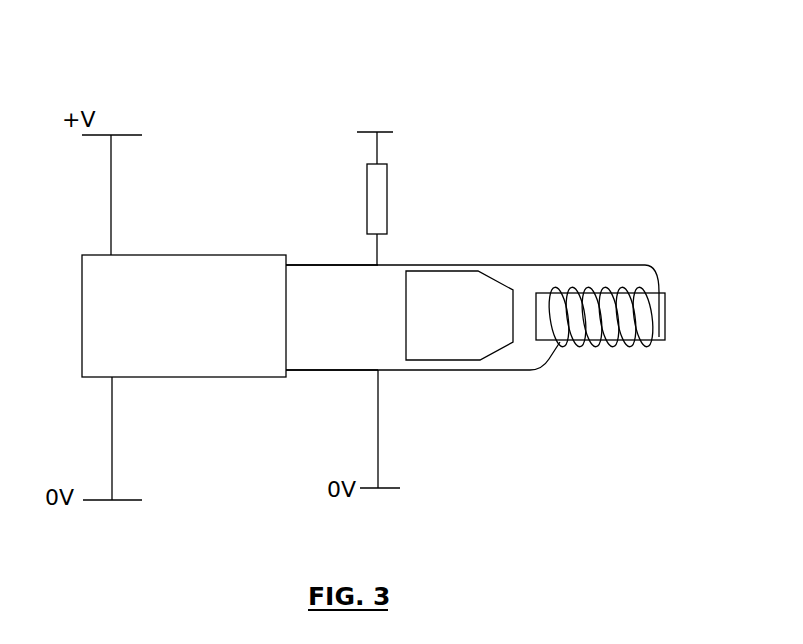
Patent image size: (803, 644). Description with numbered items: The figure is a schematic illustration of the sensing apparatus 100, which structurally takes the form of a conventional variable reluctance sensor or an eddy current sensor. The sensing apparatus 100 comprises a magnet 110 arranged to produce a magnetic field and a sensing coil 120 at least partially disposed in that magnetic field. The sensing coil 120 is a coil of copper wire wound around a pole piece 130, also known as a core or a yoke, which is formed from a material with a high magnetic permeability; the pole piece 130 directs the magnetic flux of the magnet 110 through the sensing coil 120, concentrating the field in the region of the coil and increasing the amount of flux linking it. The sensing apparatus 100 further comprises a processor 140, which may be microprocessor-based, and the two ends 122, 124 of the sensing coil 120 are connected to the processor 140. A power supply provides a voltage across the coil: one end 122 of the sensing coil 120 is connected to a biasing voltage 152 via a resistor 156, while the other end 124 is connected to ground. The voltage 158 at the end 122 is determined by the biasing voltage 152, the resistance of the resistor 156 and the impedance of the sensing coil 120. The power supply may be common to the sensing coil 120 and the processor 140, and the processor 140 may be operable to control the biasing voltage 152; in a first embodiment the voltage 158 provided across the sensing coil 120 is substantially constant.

The sensing apparatus 100 is at (252, 84).
The magnet 110 is at (448, 330).
The sensing coil 120 is at (654, 272).
The end of sensing coil 122 is at (302, 265).
The other end of sensing coil 124 is at (296, 373).
The pole piece 130 is at (547, 330).
The processor 140 is at (217, 278).
The biasing voltage 152 is at (392, 132).
The resistor 156 is at (378, 185).
The voltage 158 is at (380, 263).